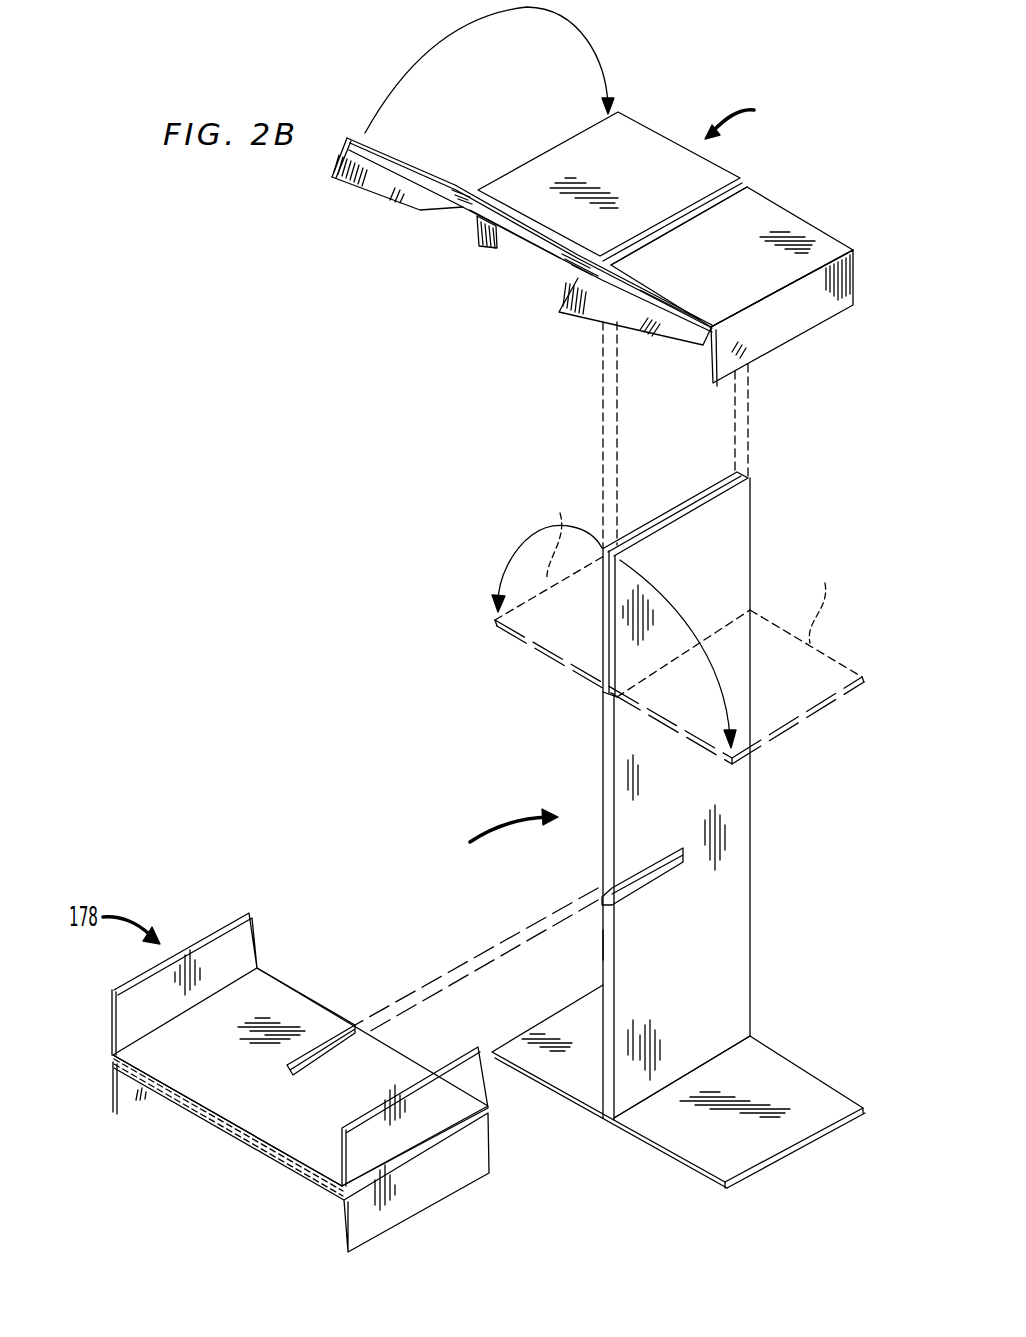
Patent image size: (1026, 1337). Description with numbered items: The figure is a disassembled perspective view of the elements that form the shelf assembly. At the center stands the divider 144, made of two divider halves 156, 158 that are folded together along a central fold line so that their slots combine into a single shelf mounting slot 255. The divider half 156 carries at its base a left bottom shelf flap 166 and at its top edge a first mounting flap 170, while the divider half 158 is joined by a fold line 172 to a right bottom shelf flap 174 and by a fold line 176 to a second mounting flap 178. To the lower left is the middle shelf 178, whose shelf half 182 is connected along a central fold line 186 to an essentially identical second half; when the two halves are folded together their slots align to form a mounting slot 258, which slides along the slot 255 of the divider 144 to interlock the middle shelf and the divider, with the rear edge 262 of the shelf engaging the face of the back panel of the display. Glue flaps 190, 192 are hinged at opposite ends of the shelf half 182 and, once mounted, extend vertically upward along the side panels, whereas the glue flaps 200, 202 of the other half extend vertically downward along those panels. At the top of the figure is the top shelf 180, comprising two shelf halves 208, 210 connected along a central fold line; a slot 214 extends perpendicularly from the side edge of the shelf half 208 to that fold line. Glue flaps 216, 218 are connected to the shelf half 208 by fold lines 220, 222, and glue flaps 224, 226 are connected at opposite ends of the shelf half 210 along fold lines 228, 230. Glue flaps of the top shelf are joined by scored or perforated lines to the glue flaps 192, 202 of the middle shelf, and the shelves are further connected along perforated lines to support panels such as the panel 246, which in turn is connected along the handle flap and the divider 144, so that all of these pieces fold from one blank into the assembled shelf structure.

The divider 144 is at (498, 842).
The divider half 156 is at (600, 942).
The divider half 158 is at (672, 988).
The left bottom shelf flap 166 is at (543, 1040).
The first mounting flap 170 is at (643, 526).
The fold line 172 is at (728, 1042).
The right bottom shelf flap 174 is at (755, 1078).
The fold line 176 is at (723, 625).
The middle shelf 178 is at (713, 500).
The top shelf 180 is at (747, 116).
The shelf half 182 is at (207, 1060).
The central fold line 186 is at (215, 1120).
The glue flap 190 is at (118, 1008).
The glue flap 192 is at (343, 1133).
The glue flap 200 is at (124, 1098).
The glue flap 202 is at (345, 1243).
The shelf half 208 is at (808, 216).
The shelf half 210 is at (517, 247).
The slot 214 is at (673, 217).
The glue flap 216 is at (745, 343).
The glue flap 218 is at (476, 226).
The fold line 220 is at (787, 292).
The fold line 222 is at (567, 140).
The glue flap 224 is at (597, 315).
The glue flap 226 is at (360, 181).
The fold line 228 is at (650, 300).
The fold line 230 is at (428, 172).
The panel 246 is at (600, 772).
The shelf mounting slot 255 is at (622, 888).
The mounting slot 258 is at (325, 1058).
The rear edge 262 is at (290, 985).